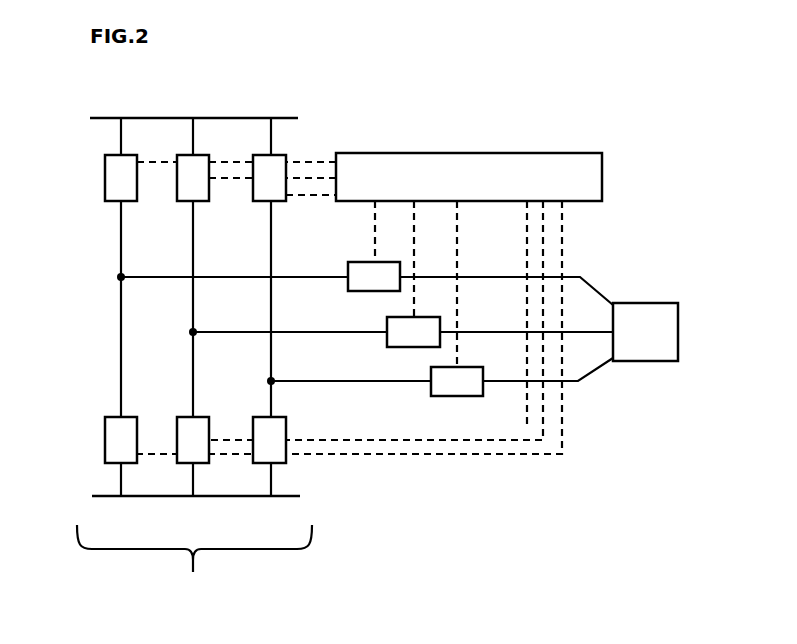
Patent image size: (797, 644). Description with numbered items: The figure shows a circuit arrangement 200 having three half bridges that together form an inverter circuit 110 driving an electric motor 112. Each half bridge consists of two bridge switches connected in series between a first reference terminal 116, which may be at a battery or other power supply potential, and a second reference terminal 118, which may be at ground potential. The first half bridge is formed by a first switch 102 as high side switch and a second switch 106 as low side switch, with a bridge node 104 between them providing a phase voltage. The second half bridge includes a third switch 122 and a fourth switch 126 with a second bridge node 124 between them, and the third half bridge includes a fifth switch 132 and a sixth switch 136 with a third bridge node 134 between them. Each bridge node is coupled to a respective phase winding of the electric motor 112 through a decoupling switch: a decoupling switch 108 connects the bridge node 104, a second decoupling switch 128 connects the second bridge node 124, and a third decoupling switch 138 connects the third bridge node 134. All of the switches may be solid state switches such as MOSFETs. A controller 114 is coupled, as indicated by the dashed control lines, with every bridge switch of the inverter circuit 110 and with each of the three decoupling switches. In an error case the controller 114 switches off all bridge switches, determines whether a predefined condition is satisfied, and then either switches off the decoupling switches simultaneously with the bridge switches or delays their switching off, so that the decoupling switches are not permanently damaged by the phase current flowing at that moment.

The circuit arrangement 200 is at (708, 157).
The first switch 102 is at (103, 188).
The bridge node 104 is at (119, 277).
The second switch 106 is at (103, 452).
The decoupling switch 108 is at (346, 262).
The inverter circuit 110 is at (194, 571).
The electric motor 112 is at (713, 355).
The controller 114 is at (469, 177).
The first reference terminal 116 is at (303, 118).
The second reference terminal 118 is at (303, 496).
The third switch 122 is at (168, 188).
The second bridge node 124 is at (191, 332).
The fourth switch 126 is at (188, 417).
The second decoupling switch 128 is at (395, 350).
The fifth switch 132 is at (250, 188).
The third bridge node 134 is at (269, 381).
The sixth switch 136 is at (297, 462).
The third decoupling switch 138 is at (430, 391).